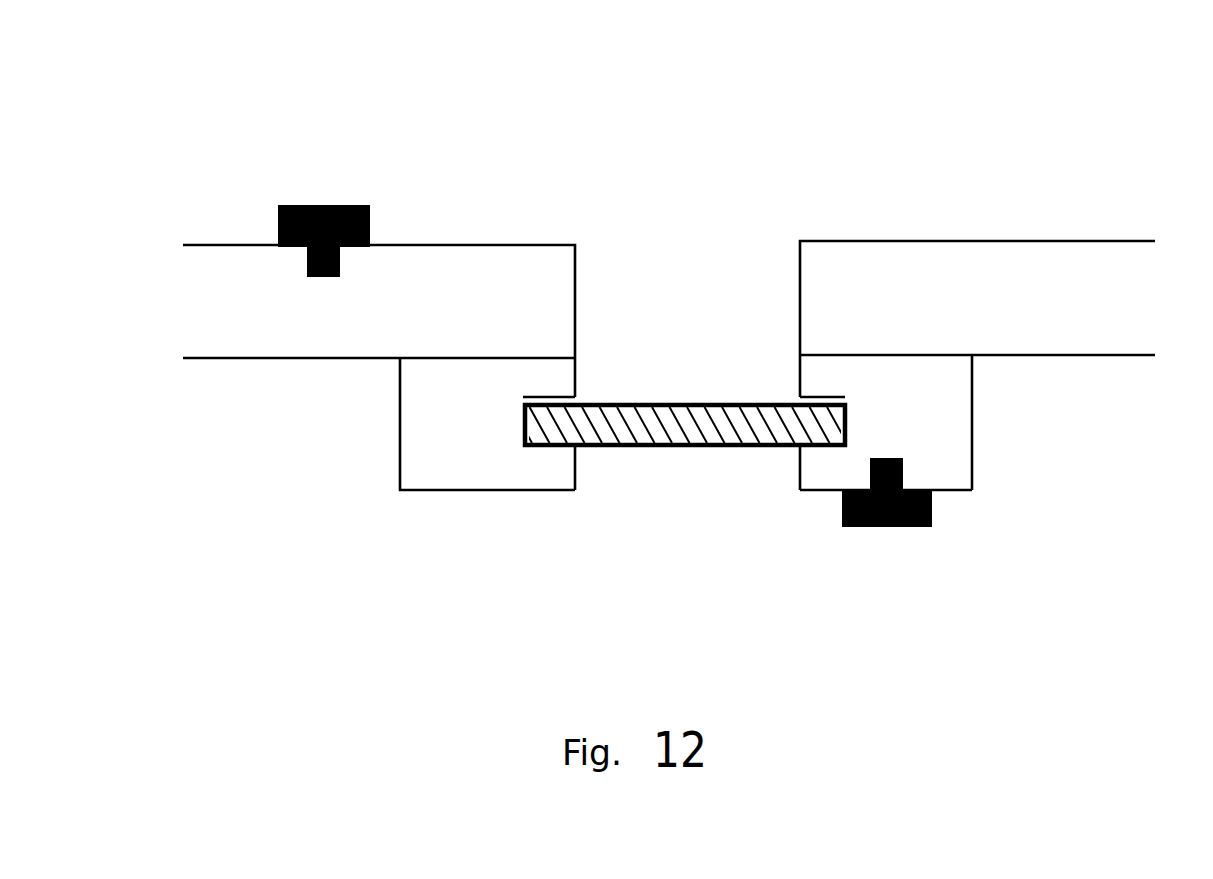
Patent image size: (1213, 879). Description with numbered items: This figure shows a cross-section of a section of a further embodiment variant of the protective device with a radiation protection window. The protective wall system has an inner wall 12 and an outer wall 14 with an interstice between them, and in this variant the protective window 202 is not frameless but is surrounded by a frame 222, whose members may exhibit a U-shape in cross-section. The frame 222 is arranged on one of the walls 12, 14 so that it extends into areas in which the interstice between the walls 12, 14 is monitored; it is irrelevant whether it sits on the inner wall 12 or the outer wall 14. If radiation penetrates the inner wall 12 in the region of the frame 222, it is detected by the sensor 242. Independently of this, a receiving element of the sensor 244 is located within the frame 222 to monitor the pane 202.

The outer wall 14 is at (200, 245).
The inner wall 12 is at (233, 358).
The sensor 242 is at (333, 205).
The sensor 244 is at (887, 527).
The protective window 202 is at (675, 443).
The frame 222 is at (937, 445).